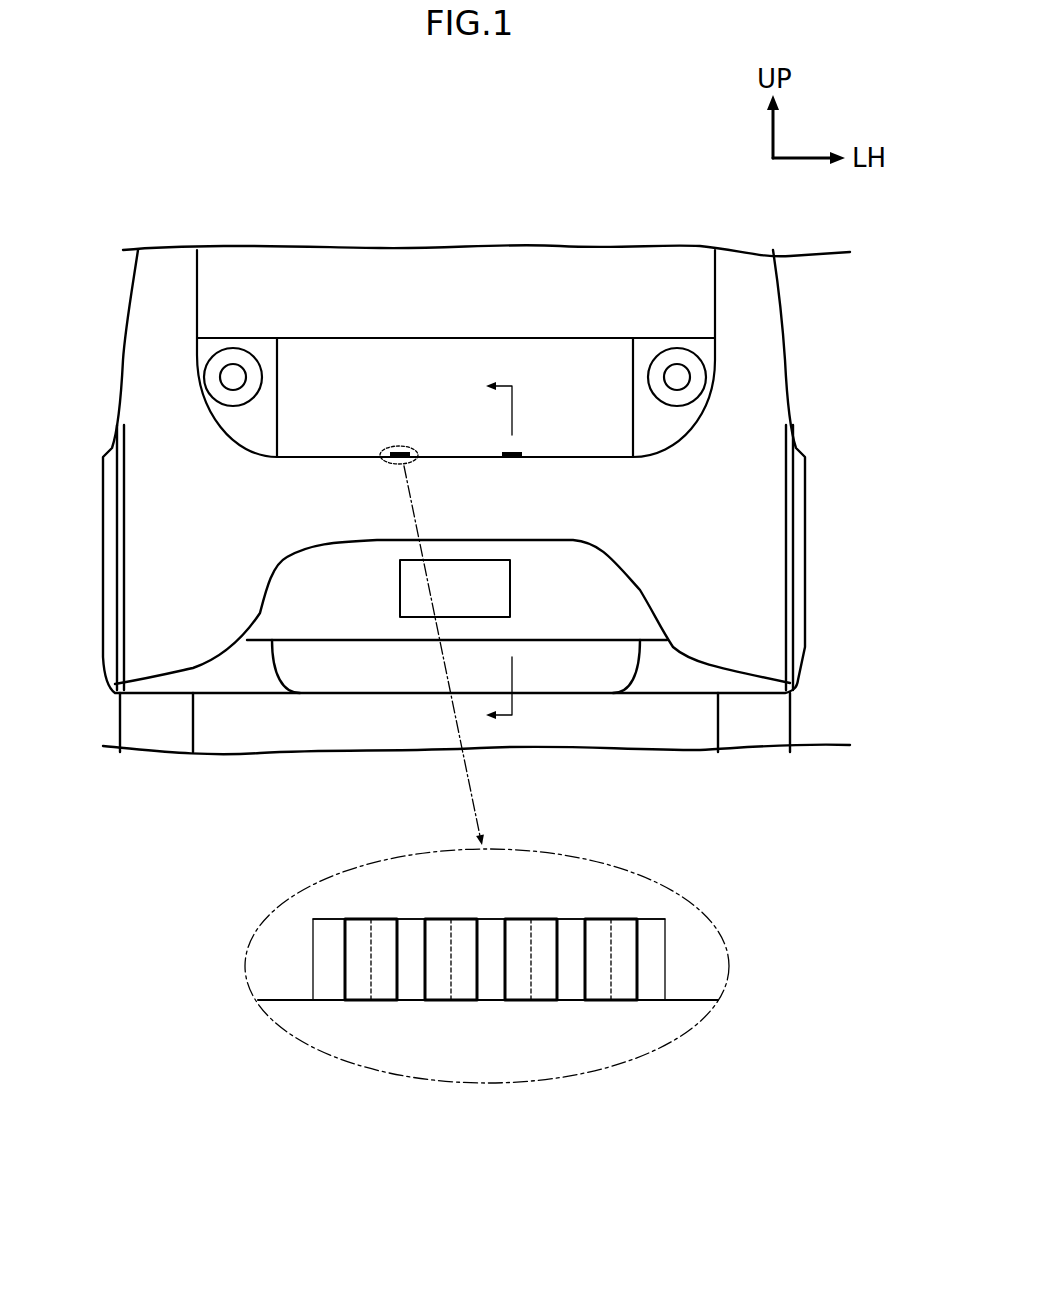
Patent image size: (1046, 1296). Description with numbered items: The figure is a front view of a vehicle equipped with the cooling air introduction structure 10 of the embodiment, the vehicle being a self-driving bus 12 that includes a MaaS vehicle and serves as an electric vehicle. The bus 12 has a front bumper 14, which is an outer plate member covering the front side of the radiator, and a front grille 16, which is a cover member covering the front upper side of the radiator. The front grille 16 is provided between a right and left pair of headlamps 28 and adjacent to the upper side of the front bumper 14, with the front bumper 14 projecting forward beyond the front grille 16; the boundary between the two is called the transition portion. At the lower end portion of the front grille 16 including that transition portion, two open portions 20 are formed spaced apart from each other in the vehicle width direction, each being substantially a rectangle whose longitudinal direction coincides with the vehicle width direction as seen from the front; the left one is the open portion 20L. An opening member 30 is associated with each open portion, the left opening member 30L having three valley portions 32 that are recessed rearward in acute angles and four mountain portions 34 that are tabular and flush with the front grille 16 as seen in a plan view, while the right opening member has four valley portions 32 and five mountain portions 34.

The cooling air introduction structure 10 is at (368, 440).
The self-driving bus 12 is at (610, 218).
The front bumper 14 is at (500, 543).
The front grille 16 is at (450, 377).
The open portions 20 is at (462, 408).
The left open portion 20L is at (518, 456).
The headlamps 28 is at (220, 377).
The opening member 30 is at (560, 975).
The left opening member 30L is at (510, 461).
The valley portions 32 is at (370, 935).
The mountain portions 34 is at (330, 990).